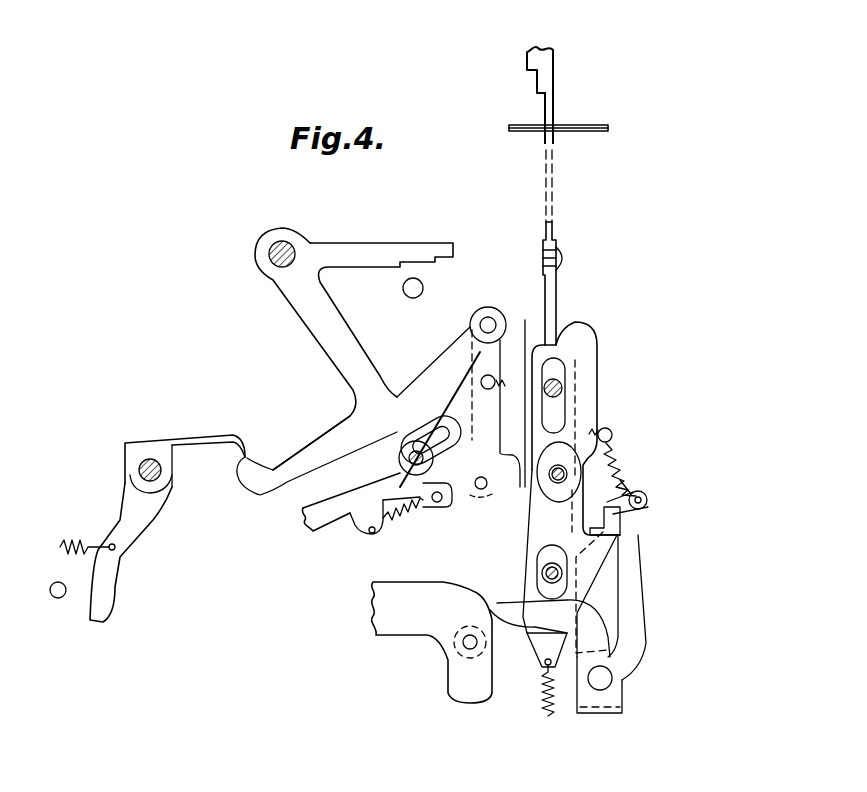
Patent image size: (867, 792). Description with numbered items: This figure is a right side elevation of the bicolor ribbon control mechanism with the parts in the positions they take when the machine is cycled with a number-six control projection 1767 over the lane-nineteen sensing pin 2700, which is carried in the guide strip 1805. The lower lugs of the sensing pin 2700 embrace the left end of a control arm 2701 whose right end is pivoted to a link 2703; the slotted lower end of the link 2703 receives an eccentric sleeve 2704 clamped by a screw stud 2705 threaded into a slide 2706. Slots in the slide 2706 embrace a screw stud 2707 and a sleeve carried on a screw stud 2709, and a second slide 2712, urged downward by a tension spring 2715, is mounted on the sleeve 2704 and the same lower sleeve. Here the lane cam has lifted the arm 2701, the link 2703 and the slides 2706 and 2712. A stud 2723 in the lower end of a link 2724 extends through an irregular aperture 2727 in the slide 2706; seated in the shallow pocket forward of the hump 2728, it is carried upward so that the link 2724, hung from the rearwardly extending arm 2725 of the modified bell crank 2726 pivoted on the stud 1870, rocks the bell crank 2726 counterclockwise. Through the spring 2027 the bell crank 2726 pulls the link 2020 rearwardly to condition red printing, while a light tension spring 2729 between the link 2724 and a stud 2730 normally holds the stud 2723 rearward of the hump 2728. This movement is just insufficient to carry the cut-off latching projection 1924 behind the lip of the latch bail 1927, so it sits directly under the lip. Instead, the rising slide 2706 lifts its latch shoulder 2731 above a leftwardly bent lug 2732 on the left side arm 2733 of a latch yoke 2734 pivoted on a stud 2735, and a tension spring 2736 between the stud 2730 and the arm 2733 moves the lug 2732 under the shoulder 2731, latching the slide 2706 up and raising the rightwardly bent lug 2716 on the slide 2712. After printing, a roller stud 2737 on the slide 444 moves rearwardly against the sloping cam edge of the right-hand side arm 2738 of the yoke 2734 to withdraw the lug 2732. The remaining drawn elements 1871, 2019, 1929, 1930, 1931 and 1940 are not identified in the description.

The control projection 1767 is at (553, 75).
The sensing pin 2700 is at (553, 108).
The guide strip 1805 is at (606, 131).
The control arm 2701 is at (556, 232).
The link 2703 is at (585, 348).
The screw stud 2707 is at (562, 388).
The eccentric sleeve 2704 is at (563, 482).
The screw stud 2705 is at (580, 478).
The screw stud 2709 is at (554, 563).
The stud 2730 is at (612, 432).
The tension spring 2736 is at (628, 466).
The latch shoulder 2731 is at (648, 511).
The latch lug 2732 is at (637, 517).
The lug 2716 is at (637, 527).
The left side arm 2733 is at (630, 587).
The stud 2735 is at (606, 682).
The latch yoke 2734 is at (603, 718).
The tension spring 2715 is at (540, 706).
The second slide 2712 is at (527, 563).
The right-hand side arm 2738 is at (500, 606).
The slide 444 is at (378, 620).
The roller stud 2737 is at (460, 672).
The tension spring 2729 is at (510, 370).
The slide 2706 is at (480, 418).
The link 2724 is at (477, 397).
The hump 2728 is at (500, 517).
The stud 2723 is at (492, 488).
The irregular aperture 2727 is at (525, 505).
The bell crank 2726 is at (337, 343).
The stud 1870 is at (287, 250).
The pin 1871 is at (411, 290).
The rearwardly extending arm 2725 is at (441, 357).
The pivot pin 2019 is at (409, 452).
The link 2020 is at (310, 527).
The spring 2027 is at (405, 522).
The latch bail 1927 is at (208, 436).
The shaft 1929 is at (140, 480).
The lever 1931 is at (100, 598).
The latching projection 1924 is at (258, 481).
The spring 1930 is at (85, 543).
The stud 1940 is at (62, 599).